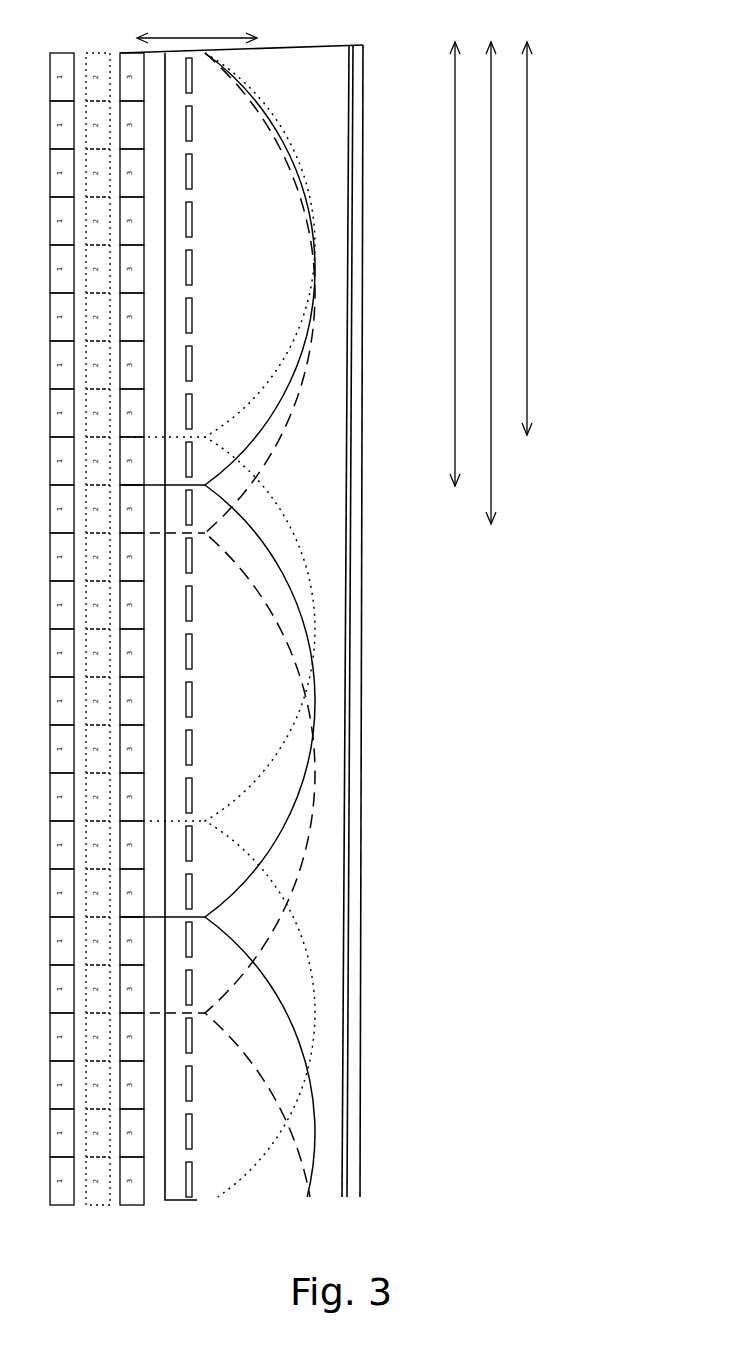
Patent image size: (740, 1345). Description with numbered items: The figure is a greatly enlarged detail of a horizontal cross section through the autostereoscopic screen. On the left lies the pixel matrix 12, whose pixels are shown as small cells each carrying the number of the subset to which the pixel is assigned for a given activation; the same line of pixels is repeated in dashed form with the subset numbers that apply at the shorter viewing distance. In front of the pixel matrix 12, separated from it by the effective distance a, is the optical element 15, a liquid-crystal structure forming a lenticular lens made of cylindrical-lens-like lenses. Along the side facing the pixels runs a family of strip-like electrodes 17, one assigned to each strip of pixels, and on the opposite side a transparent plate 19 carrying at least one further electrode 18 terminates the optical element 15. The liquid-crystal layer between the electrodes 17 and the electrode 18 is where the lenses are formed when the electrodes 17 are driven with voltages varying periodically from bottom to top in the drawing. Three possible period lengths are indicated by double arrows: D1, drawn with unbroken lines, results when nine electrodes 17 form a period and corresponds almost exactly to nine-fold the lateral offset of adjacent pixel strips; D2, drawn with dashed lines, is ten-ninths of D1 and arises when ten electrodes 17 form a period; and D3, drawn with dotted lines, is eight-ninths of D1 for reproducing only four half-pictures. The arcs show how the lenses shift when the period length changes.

The pixel matrix 12 is at (134, 1207).
The optical element 15 is at (365, 1203).
The electrodes 17 is at (192, 1078).
The further electrode 18 is at (350, 914).
The transparent plate 19 is at (356, 970).
The effective distance a is at (262, 40).
The first period length D1 is at (452, 280).
The second period length D2 is at (497, 457).
The third period length D3 is at (530, 232).